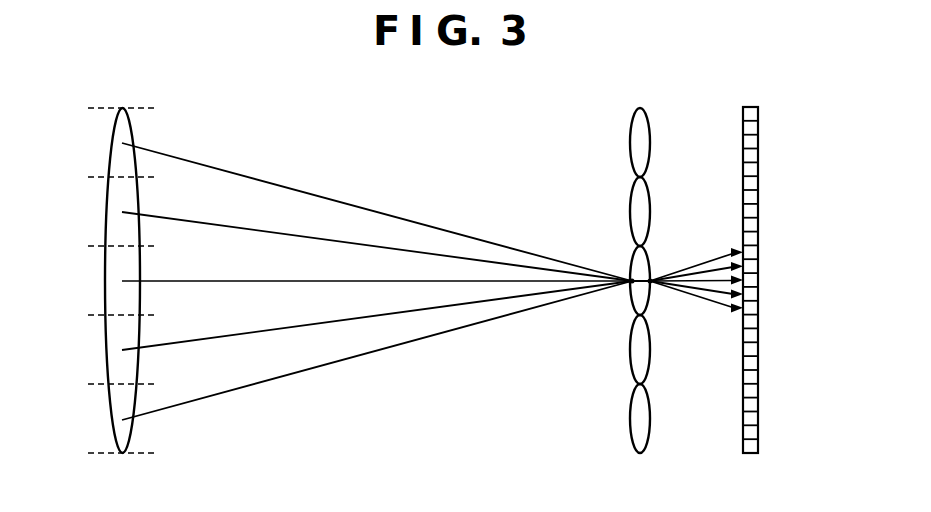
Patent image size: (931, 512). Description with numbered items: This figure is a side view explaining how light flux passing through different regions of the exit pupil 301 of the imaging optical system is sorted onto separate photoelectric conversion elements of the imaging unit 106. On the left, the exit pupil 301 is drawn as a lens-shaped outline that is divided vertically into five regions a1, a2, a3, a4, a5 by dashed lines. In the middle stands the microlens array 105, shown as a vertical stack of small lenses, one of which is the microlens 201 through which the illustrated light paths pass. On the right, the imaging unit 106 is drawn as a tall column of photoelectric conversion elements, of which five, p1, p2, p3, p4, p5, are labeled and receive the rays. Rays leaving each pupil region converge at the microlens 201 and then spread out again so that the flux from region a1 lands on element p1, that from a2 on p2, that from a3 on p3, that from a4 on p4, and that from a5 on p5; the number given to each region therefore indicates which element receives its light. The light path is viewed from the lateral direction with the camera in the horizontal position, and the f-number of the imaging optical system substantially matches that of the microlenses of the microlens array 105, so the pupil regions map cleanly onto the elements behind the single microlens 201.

The exit pupil 301 is at (118, 112).
The microlens array 105 is at (640, 107).
The imaging unit 106 is at (750, 107).
The microlens 201 is at (640, 265).
The region a1 of exit pupil a1 is at (350, 207).
The region a2 of exit pupil a2 is at (350, 241).
The region a3 of exit pupil a3 is at (350, 281).
The region a4 of exit pupil a4 is at (350, 320).
The region a5 of exit pupil a5 is at (350, 355).
The photoelectric conversion element p1 is at (758, 308).
The photoelectric conversion element p2 is at (758, 294).
The photoelectric conversion element p3 is at (758, 280).
The photoelectric conversion element p4 is at (758, 266).
The photoelectric conversion element p5 is at (758, 252).